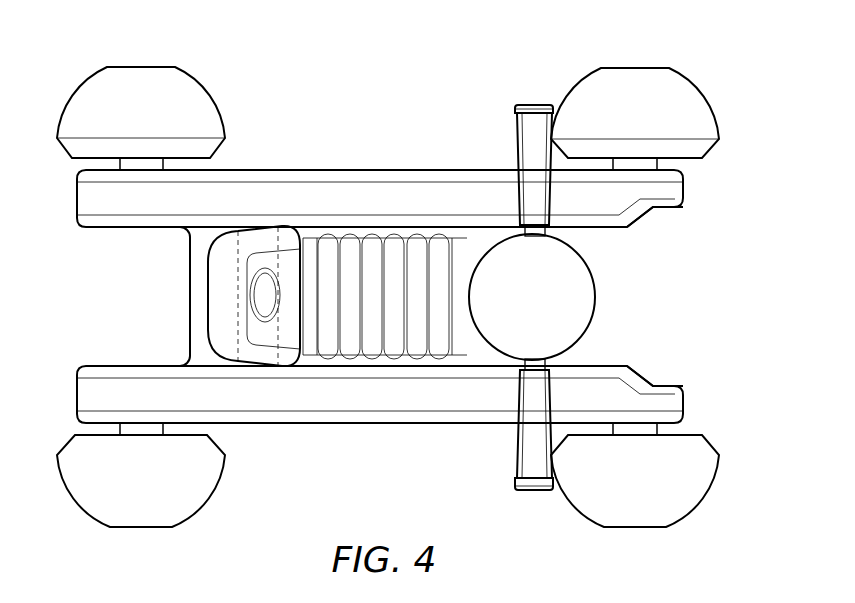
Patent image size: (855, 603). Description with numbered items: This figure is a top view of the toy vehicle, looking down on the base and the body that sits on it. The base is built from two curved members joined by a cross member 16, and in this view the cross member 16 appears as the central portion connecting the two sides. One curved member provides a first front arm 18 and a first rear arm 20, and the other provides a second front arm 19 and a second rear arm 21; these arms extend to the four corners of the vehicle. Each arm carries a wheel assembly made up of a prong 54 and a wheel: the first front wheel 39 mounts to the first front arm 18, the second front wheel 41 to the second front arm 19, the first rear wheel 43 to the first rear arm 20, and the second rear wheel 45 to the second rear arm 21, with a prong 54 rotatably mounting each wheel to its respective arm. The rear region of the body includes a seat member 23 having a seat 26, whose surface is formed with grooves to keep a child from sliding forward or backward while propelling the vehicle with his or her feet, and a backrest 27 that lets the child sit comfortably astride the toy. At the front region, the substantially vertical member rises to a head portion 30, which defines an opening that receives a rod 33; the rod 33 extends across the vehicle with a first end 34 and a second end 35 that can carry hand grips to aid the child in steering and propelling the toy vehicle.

The cross member 16 is at (194, 297).
The first front arm 18 is at (625, 393).
The second front arm 19 is at (625, 200).
The first rear arm 20 is at (80, 396).
The second rear arm 21 is at (80, 197).
The seat member 23 is at (344, 108).
The seat 26 is at (377, 235).
The backrest 27 is at (255, 240).
The head portion 30 is at (589, 297).
The rod 33 is at (537, 359).
The first end 34 is at (537, 497).
The second end 35 is at (537, 99).
The first front wheel 39 is at (686, 500).
The second front wheel 41 is at (686, 93).
The first rear wheel 43 is at (195, 500).
The second rear wheel 45 is at (195, 93).
The prong 54 is at (141, 163).